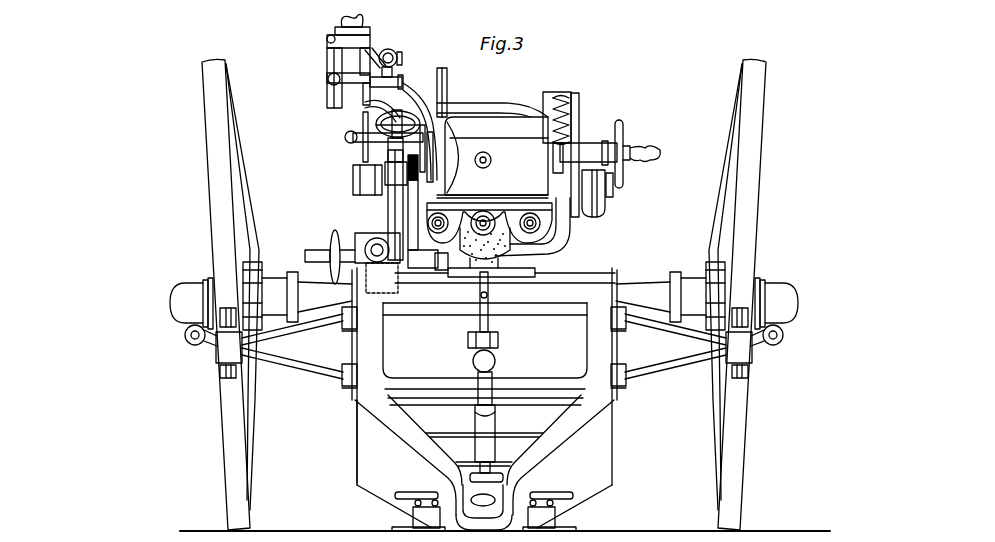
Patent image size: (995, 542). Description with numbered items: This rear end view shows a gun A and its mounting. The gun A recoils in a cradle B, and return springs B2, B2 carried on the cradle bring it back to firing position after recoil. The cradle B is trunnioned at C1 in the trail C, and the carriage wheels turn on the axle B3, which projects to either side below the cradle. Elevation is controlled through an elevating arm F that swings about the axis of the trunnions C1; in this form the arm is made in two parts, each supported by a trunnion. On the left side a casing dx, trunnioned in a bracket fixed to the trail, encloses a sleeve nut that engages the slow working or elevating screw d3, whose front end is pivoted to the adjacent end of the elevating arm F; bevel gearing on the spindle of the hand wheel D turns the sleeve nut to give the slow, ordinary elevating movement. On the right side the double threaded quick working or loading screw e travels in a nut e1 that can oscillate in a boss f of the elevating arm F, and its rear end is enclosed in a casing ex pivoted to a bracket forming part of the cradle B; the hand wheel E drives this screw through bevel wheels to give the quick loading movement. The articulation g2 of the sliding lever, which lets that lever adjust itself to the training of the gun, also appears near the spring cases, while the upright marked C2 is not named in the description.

The gun A is at (487, 128).
The boss of the elevating arm f is at (555, 96).
The nut e1 is at (577, 103).
The loading screw e is at (570, 118).
The hand wheel E is at (623, 128).
The casing ex is at (566, 153).
The uprights C2 is at (612, 196).
The trail C is at (484, 399).
The trunnions C1 is at (368, 412).
The cradle B is at (560, 222).
The return springs B2 is at (548, 236).
The axle B3 is at (505, 258).
The articulation of the sliding lever g2 is at (513, 258).
The elevating arm F is at (378, 180).
The elevating screw d3 is at (377, 250).
The casing dx is at (366, 272).
The hand wheel D is at (330, 263).